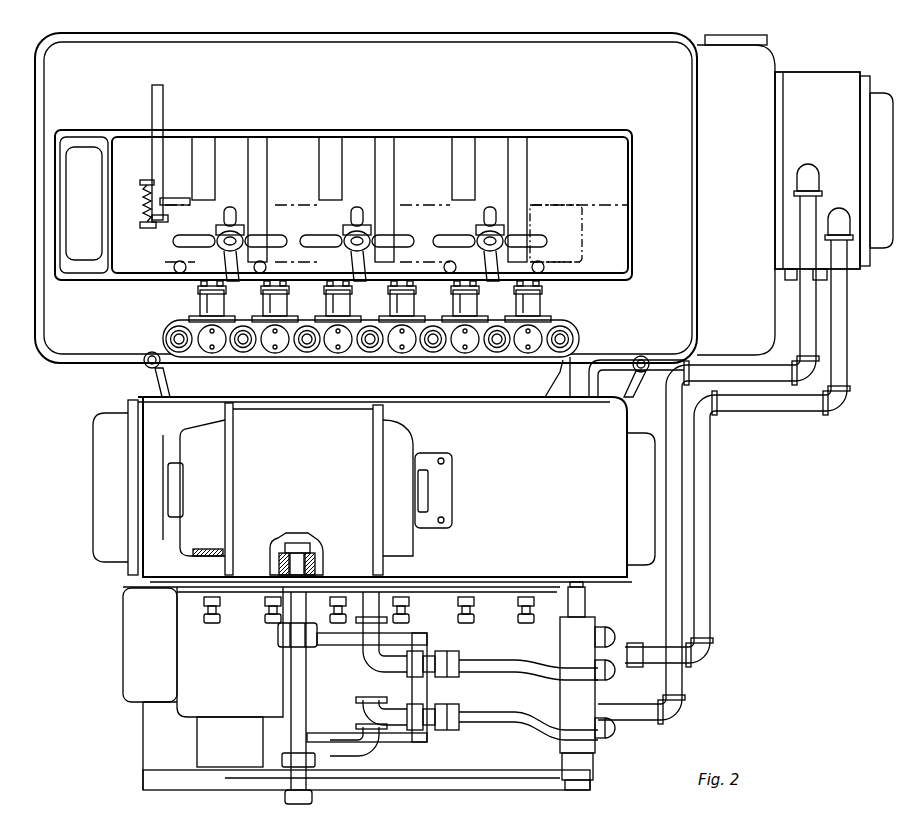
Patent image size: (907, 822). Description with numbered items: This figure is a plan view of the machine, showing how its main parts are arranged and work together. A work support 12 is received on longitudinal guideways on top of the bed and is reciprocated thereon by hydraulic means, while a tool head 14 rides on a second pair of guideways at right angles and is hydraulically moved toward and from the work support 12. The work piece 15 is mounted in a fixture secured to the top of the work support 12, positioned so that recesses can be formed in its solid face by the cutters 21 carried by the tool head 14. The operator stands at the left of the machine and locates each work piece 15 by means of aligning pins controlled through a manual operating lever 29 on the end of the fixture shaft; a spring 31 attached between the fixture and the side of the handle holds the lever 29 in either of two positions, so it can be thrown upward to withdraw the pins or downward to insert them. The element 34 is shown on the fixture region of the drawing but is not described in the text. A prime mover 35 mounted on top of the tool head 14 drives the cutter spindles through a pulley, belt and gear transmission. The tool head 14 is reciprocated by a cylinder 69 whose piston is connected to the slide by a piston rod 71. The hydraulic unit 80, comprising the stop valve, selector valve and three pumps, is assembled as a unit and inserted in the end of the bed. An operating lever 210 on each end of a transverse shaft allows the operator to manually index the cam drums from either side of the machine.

The work support 12 is at (560, 143).
The tool head 14 is at (177, 558).
The work piece 15 is at (550, 208).
The cutters 21 is at (198, 291).
The manual operating lever 29 is at (152, 103).
The spring 31 is at (143, 206).
The valve handle 34 is at (275, 238).
The prime mover 35 is at (410, 441).
The cylinder 69 is at (417, 742).
The piston rod 71 is at (372, 605).
The hydraulic unit 80 is at (796, 73).
The operating lever 210 is at (150, 384).